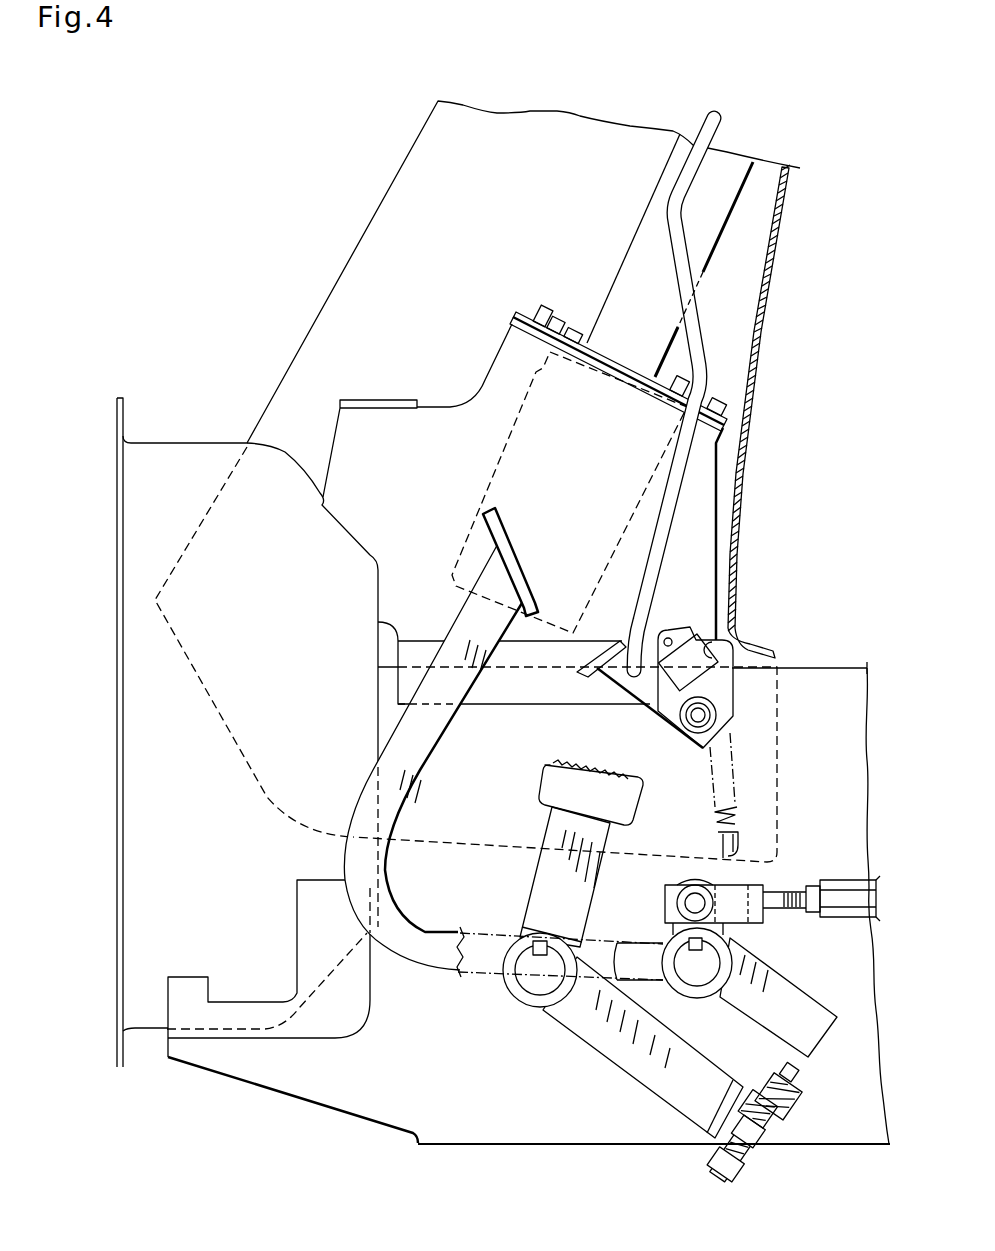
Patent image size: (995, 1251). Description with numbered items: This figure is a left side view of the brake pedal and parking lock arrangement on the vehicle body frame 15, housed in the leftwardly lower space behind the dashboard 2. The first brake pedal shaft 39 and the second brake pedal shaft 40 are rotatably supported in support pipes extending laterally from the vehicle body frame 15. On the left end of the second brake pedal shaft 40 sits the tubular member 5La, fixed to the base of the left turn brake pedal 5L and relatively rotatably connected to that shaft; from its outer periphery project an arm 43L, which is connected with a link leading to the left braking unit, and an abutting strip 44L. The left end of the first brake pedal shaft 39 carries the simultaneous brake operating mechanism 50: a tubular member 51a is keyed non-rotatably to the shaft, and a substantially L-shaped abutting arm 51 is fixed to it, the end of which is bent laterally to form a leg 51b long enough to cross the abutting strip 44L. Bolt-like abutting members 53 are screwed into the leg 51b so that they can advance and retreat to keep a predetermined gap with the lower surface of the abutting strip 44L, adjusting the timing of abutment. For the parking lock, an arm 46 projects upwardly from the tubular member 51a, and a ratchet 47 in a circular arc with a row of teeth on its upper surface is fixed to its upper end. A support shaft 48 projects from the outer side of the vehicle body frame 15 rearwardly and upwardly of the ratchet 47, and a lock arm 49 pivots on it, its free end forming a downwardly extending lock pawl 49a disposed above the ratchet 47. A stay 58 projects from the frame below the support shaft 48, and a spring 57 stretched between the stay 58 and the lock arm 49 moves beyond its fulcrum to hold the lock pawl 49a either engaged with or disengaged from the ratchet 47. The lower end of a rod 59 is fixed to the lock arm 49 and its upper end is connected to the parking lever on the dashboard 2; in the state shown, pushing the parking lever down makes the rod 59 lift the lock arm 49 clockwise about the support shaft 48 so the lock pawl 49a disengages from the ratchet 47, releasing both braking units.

The dashboard 2 is at (748, 466).
The vehicle body frame 15 is at (802, 663).
The left turn brake pedal 5L is at (498, 521).
The tubular member 5La is at (693, 998).
The first brake pedal shaft 39 is at (535, 986).
The second brake pedal shaft 40 is at (657, 961).
The arm 43L is at (697, 878).
The abutting strip 44L is at (800, 1001).
The arm 46 is at (540, 901).
The ratchet 47 is at (550, 784).
The support shaft 48 is at (678, 743).
The lock arm 49 is at (658, 723).
The lock pawl 49a is at (585, 673).
The simultaneous brake operating mechanism 50 is at (825, 1104).
The abutting arm 51 is at (585, 1041).
The tubular member 51a is at (503, 984).
The leg 51b is at (707, 1134).
The abutting member 53 is at (710, 1171).
The spring 57 is at (733, 818).
The stay 58 is at (740, 858).
The rod 59 is at (670, 228).